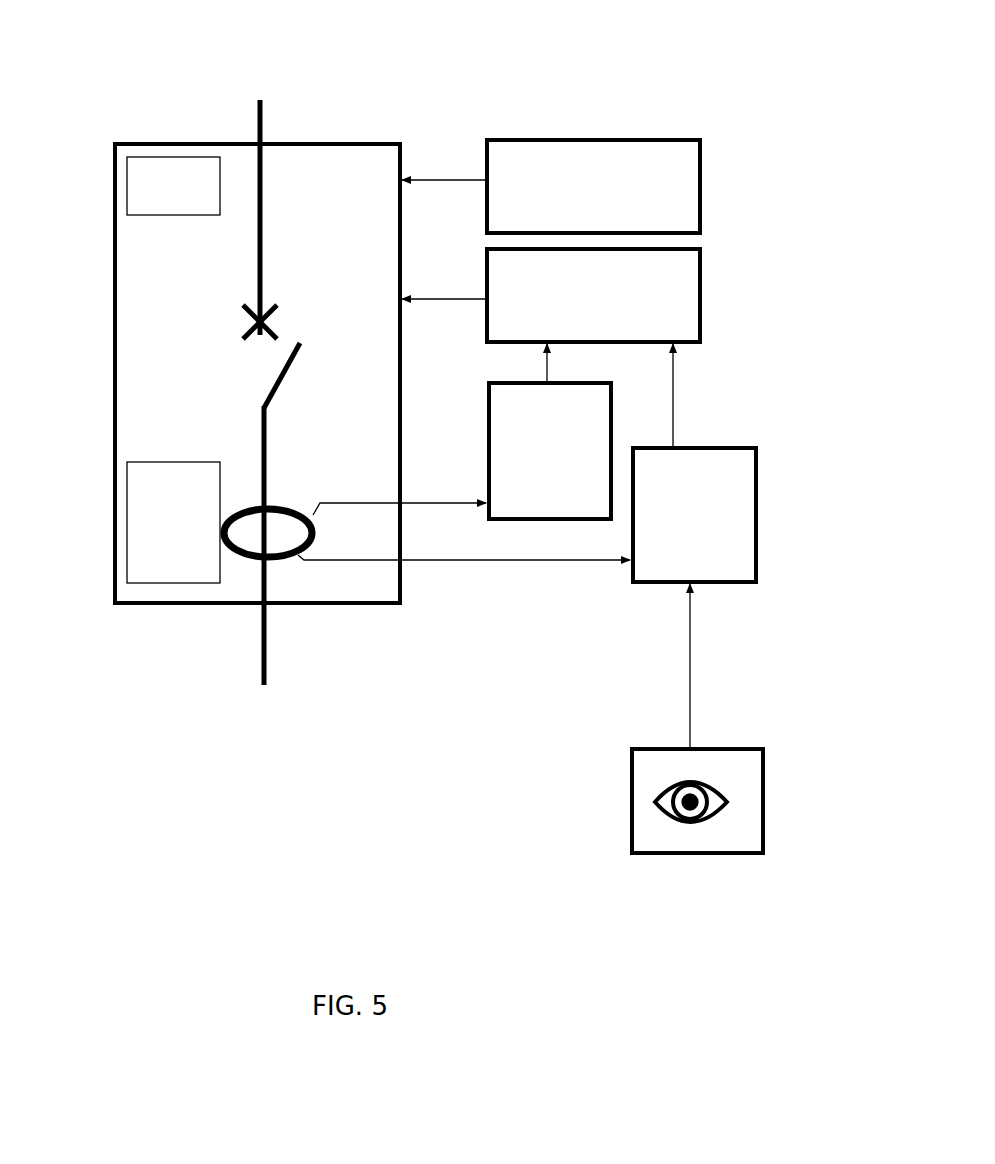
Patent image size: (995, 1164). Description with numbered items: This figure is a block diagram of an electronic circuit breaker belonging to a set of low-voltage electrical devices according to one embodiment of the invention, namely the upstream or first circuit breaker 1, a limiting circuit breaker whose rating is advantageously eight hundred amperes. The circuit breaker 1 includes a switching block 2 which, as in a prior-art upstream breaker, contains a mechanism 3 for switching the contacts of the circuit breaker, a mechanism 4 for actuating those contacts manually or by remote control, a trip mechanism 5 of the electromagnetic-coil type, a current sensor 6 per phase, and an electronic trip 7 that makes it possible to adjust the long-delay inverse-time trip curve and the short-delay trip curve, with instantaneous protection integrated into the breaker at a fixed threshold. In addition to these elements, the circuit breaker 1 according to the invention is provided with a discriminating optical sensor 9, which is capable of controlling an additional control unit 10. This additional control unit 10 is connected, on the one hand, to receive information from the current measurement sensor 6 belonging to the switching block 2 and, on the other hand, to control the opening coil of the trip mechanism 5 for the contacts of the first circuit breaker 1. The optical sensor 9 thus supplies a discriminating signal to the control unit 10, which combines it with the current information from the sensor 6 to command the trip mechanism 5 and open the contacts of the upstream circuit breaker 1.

The limiting circuit breaker 1 is at (520, 100).
The switching block 2 is at (167, 157).
The mechanism for switching the contacts 3 is at (166, 365).
The mechanism for actuating the contacts 4 is at (660, 140).
The trip mechanism 5 is at (690, 250).
The current sensor 6 is at (155, 583).
The electronic trip 7 is at (548, 519).
The discriminating optical sensor 9 is at (710, 745).
The additional control unit 10 is at (657, 582).